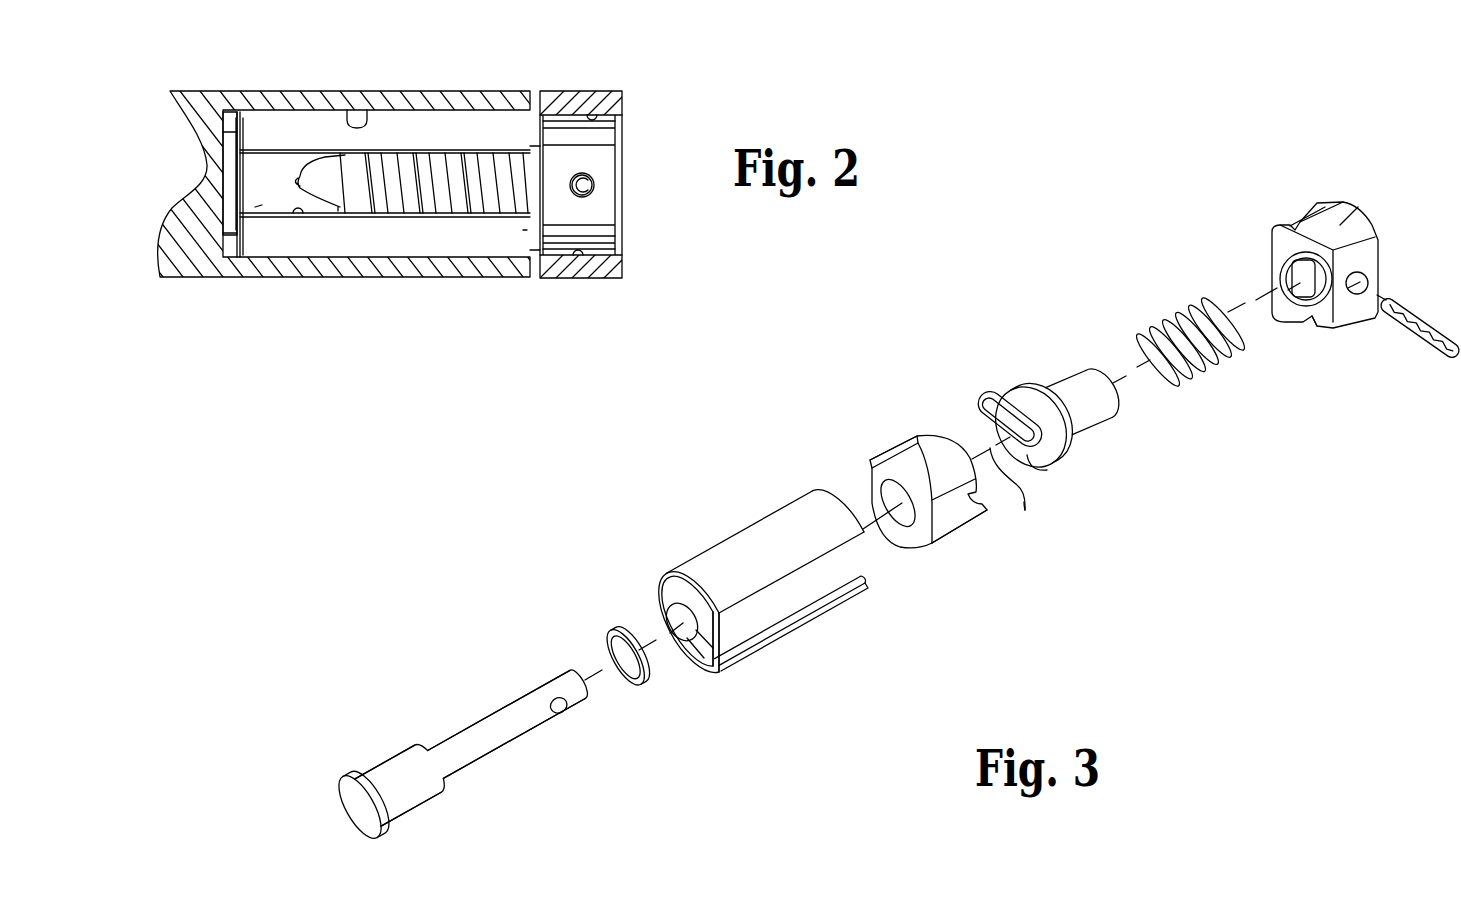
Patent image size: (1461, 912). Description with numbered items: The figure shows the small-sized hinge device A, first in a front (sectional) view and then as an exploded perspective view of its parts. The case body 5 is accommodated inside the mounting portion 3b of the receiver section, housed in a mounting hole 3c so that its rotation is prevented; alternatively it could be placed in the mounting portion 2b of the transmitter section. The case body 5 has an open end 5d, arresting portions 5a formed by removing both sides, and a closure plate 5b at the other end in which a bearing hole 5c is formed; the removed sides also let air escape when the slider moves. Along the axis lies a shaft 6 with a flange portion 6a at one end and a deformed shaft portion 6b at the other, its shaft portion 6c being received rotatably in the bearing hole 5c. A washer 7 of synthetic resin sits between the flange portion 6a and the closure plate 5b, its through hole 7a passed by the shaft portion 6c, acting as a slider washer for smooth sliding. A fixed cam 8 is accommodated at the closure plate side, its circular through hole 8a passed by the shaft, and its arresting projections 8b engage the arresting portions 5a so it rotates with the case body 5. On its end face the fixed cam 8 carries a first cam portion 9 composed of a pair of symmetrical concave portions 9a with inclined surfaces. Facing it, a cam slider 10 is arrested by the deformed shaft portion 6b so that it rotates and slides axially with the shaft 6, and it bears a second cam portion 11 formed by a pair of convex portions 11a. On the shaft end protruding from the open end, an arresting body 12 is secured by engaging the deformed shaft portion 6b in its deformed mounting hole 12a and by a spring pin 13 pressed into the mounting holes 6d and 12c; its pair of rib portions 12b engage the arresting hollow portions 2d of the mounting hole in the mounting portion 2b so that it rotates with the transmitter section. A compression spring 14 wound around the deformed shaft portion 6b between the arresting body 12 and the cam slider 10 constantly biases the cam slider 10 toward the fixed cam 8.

In FIG. 2, the mounting portion 2b is at (583, 93).
In FIG. 2, the arresting hollow portion 2d is at (593, 116).
In FIG. 2, the mounting portion 3b is at (252, 96).
In FIG. 2, the mounting hole 3c is at (365, 112).
In FIG. 2, the case body 5 is at (440, 128).
In FIG. 3, the case body 5 is at (746, 524).
In FIG. 2, the arresting portion 5a is at (296, 220).
In FIG. 3, the arresting portion 5a is at (658, 625).
In FIG. 2, the closure plate 5b is at (235, 232).
In FIG. 3, the closure plate 5b is at (718, 668).
In FIG. 3, the bearing hole 5c is at (702, 667).
In FIG. 2, the open end 5d is at (525, 237).
In FIG. 3, the open end 5d is at (858, 565).
In FIG. 3, the shaft 6 is at (504, 706).
In FIG. 2, the flange portion 6a is at (222, 151).
In FIG. 3, the flange portion 6a is at (358, 806).
In FIG. 3, the deformed shaft portion 6b is at (543, 722).
In FIG. 3, the shaft portion 6c is at (427, 790).
In FIG. 3, the mounting hole 6d is at (567, 713).
In FIG. 2, the washer 7 is at (233, 122).
In FIG. 3, the washer 7 is at (612, 640).
In FIG. 3, the through hole 7a is at (628, 688).
In FIG. 2, the fixed cam 8 is at (260, 207).
In FIG. 3, the fixed cam 8 is at (913, 463).
In FIG. 3, the through hole 8a is at (903, 517).
In FIG. 3, the arresting projection 8b is at (871, 485).
In FIG. 3, the first cam portion 9 is at (962, 437).
In FIG. 2, the concave portion 9a is at (298, 185).
In FIG. 3, the concave portion 9a is at (1025, 510).
In FIG. 2, the cam slider 10 is at (350, 205).
In FIG. 3, the cam slider 10 is at (1064, 388).
In FIG. 3, the second cam portion 11 is at (997, 405).
In FIG. 2, the convex portion 11a is at (323, 172).
In FIG. 3, the convex portion 11a is at (1025, 510).
In FIG. 2, the arresting body 12 is at (598, 237).
In FIG. 3, the arresting body 12 is at (1375, 252).
In FIG. 3, the deformed mounting hole 12a is at (1288, 296).
In FIG. 2, the rib portion 12b is at (613, 124).
In FIG. 3, the rib portion 12b is at (1342, 213).
In FIG. 2, the mounting hole 12c is at (595, 194).
In FIG. 3, the mounting hole 12c is at (1368, 277).
In FIG. 2, the spring pin 13 is at (588, 181).
In FIG. 3, the spring pin 13 is at (1428, 347).
In FIG. 2, the compression spring 14 is at (455, 190).
In FIG. 3, the compression spring 14 is at (1180, 320).
In FIG. 2, the small-sized hinge device A is at (478, 106).